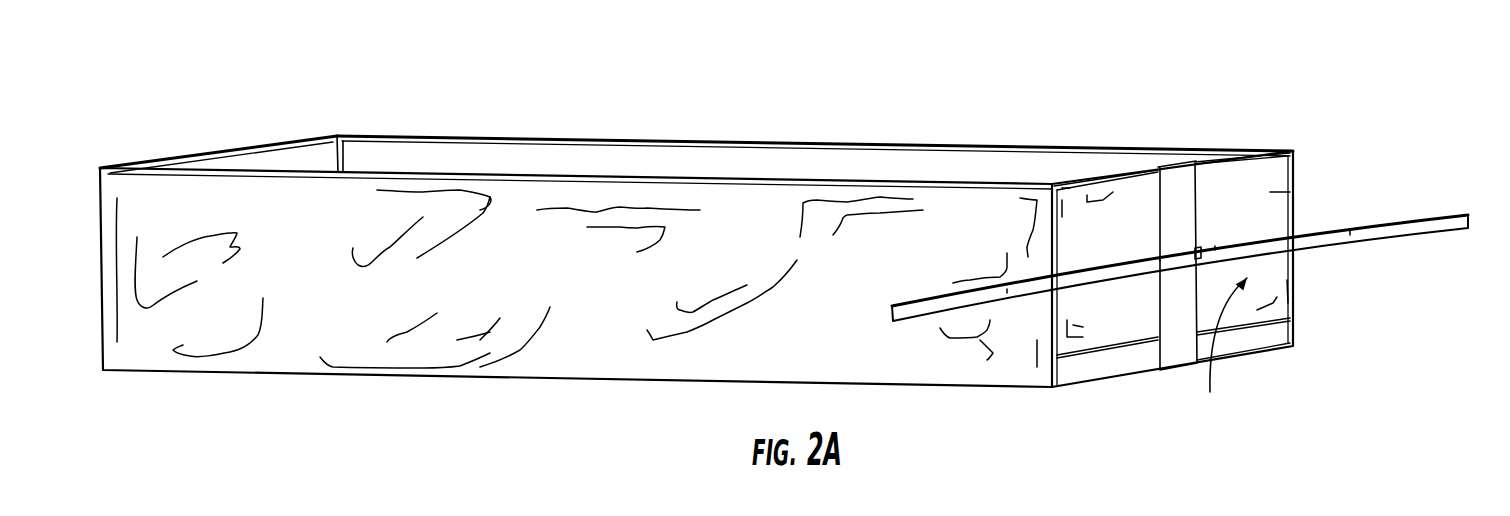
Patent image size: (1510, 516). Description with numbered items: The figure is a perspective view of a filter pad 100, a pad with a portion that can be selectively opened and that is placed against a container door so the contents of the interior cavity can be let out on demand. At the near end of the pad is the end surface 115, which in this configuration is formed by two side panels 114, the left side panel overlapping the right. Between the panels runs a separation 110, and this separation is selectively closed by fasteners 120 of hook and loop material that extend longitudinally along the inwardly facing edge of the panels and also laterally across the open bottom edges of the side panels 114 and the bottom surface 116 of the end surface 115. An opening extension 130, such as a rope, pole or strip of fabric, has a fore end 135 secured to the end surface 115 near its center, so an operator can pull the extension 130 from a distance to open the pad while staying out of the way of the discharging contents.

The filter pad 100 is at (1040, 63).
The separation 110 is at (1180, 221).
The side panel 114 is at (1082, 210).
The end surface 115 is at (1222, 349).
The bottom surface 116 is at (1260, 340).
The fastener 120 is at (1175, 178).
The opening extension 130 is at (932, 300).
The fore end 135 is at (1198, 253).